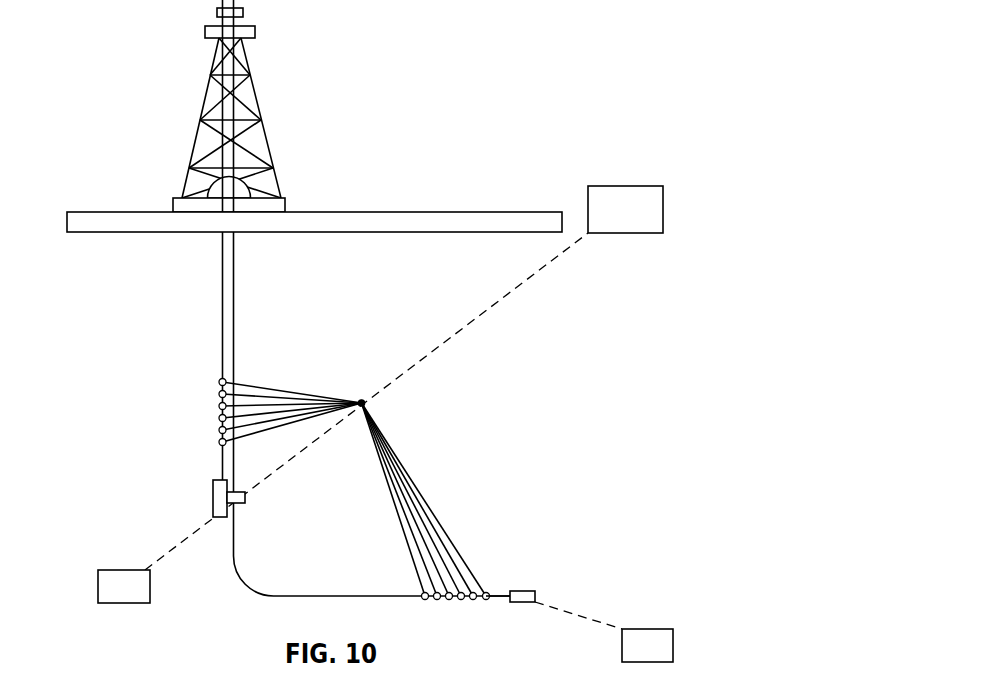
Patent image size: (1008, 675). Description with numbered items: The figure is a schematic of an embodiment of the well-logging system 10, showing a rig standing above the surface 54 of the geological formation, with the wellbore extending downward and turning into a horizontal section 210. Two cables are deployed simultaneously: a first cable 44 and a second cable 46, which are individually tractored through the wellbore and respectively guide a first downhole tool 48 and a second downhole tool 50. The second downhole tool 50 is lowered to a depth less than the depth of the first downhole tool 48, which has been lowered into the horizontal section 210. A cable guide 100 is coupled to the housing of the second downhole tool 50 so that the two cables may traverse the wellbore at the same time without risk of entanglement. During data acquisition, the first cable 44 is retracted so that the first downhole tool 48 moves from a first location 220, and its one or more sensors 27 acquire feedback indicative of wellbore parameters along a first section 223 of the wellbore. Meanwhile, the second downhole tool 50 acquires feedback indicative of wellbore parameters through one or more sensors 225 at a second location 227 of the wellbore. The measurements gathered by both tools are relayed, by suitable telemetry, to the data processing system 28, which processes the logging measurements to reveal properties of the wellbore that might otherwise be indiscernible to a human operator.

The well-logging system 10 is at (95, 45).
The surface 54 is at (416, 220).
The data processing system 28 is at (612, 186).
The second cable 46 is at (221, 318).
The first cable 44 is at (235, 335).
The second location 227 is at (206, 466).
The second downhole tool 50 is at (213, 498).
The cable guide 100 is at (256, 499).
The sensors 225 is at (105, 570).
The first downhole tool 48 is at (523, 591).
The horizontal section 210 is at (558, 591).
The sensors 27 is at (660, 629).
The first section 223 is at (462, 607).
The first location 220 is at (535, 607).